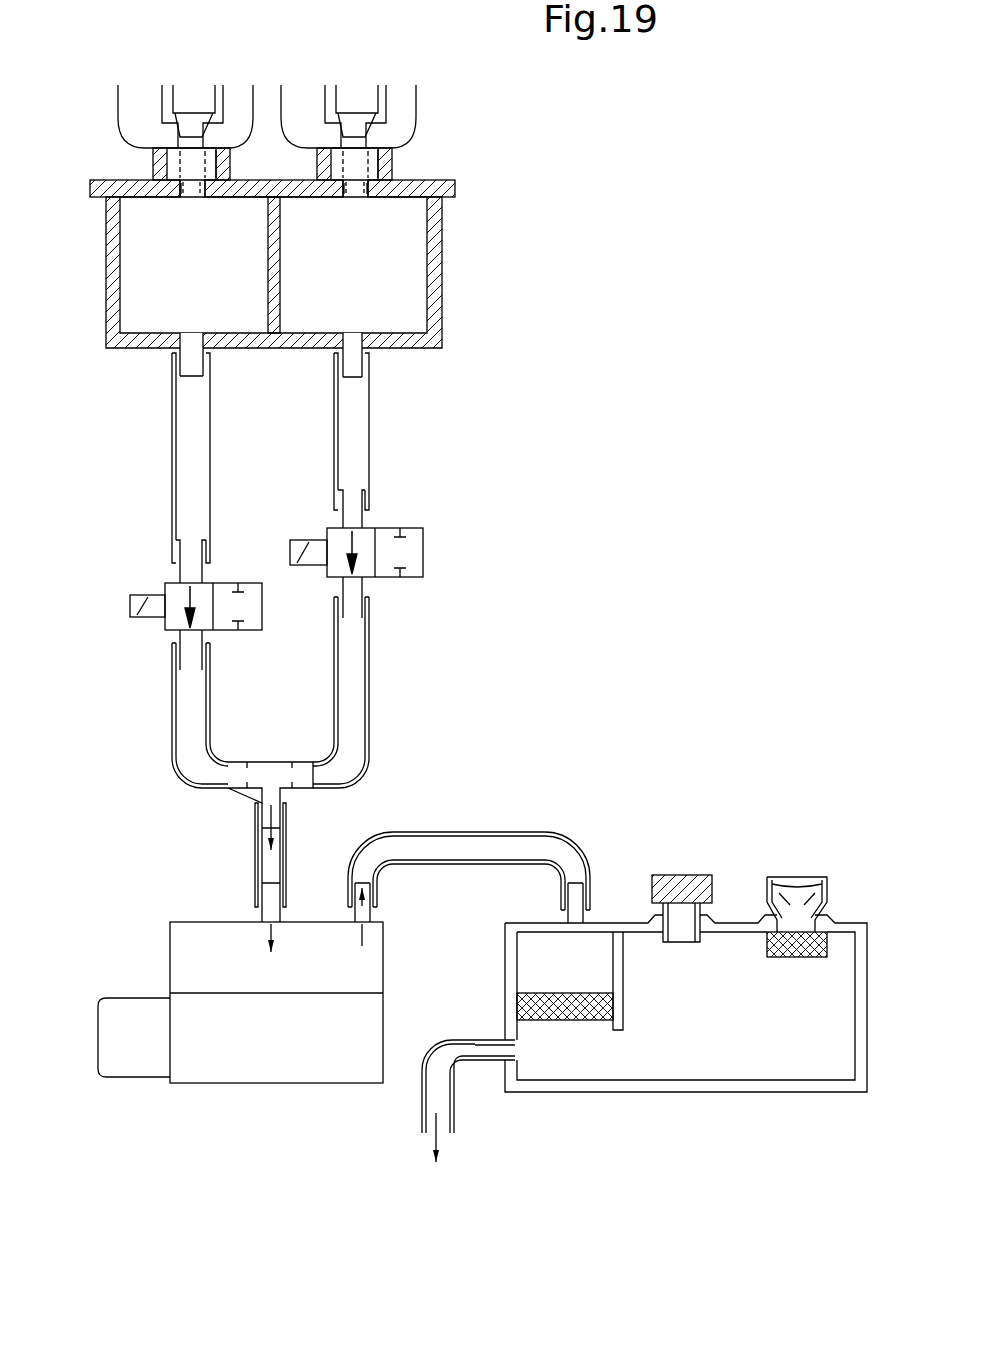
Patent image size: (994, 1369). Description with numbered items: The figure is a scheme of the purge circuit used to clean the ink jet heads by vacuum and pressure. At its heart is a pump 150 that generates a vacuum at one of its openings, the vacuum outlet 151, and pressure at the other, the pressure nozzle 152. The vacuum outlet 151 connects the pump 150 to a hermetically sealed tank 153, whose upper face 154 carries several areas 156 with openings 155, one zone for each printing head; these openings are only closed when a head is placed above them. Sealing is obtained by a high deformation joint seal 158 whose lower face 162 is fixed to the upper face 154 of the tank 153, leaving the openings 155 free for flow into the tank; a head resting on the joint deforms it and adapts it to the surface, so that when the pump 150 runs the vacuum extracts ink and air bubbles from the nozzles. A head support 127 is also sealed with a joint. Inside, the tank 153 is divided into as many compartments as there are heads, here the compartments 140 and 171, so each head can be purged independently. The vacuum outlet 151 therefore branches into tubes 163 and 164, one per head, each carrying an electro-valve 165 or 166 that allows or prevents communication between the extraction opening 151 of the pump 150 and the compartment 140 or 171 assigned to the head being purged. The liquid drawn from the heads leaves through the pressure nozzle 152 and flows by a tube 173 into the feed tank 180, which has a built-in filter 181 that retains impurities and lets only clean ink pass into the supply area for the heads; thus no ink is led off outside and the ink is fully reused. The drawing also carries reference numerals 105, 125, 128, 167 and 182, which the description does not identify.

The connection nozzle 105 is at (153, 160).
The first container 125 is at (238, 88).
The support 127 is at (396, 96).
The insert 128 is at (178, 88).
The compartment 140 is at (190, 346).
The pump 150 is at (250, 1068).
The vacuum outlet 151 is at (292, 887).
The pressure nozzle 152 is at (380, 898).
The tank 153 is at (440, 305).
The upper face of the tank 154 is at (452, 177).
The openings 155 is at (357, 196).
The areas 156 is at (193, 137).
The joint seal 158 is at (393, 160).
The lower face of the joint 162 is at (220, 180).
The tube 163 is at (200, 766).
The tube 164 is at (367, 694).
The electro-valve 165 is at (412, 553).
The electro-valve 166 is at (168, 624).
The bore 167 is at (343, 203).
The compartment 171 is at (353, 346).
The tube 173 is at (487, 850).
The feed tank 180 is at (727, 1093).
The filter 181 is at (594, 1020).
The chamber 182 is at (751, 1028).